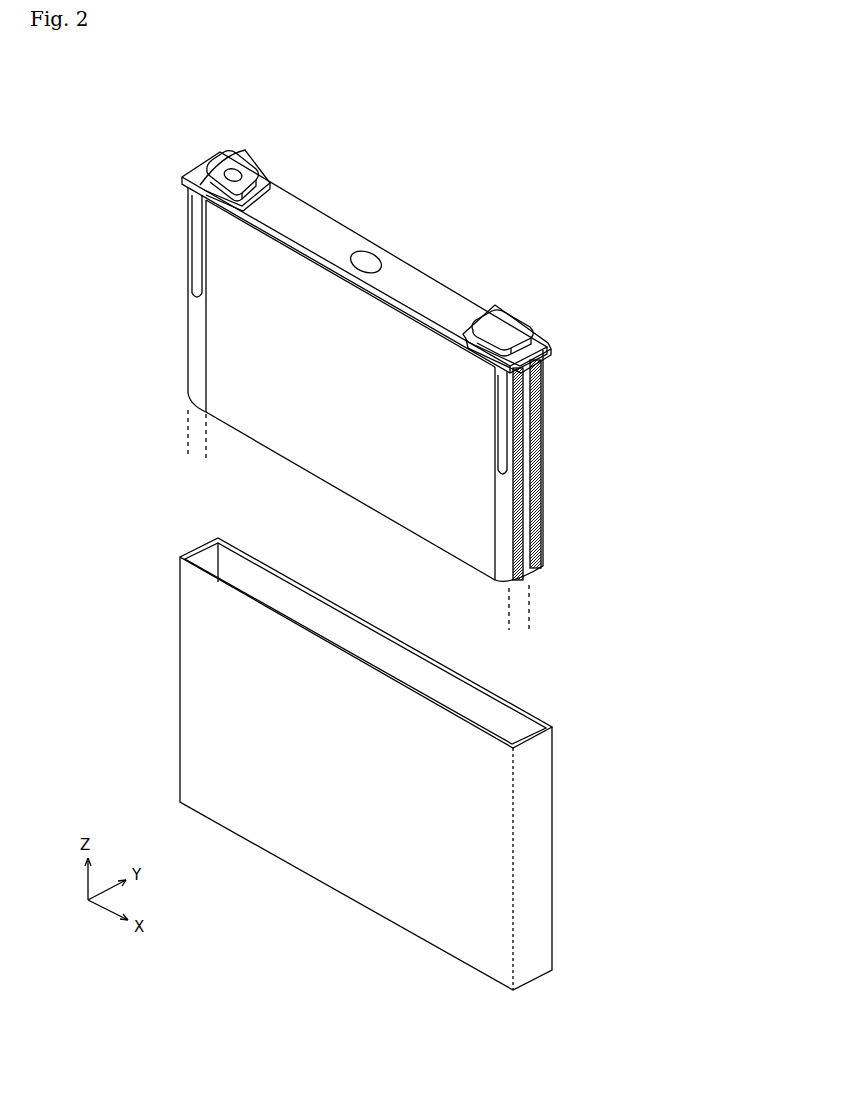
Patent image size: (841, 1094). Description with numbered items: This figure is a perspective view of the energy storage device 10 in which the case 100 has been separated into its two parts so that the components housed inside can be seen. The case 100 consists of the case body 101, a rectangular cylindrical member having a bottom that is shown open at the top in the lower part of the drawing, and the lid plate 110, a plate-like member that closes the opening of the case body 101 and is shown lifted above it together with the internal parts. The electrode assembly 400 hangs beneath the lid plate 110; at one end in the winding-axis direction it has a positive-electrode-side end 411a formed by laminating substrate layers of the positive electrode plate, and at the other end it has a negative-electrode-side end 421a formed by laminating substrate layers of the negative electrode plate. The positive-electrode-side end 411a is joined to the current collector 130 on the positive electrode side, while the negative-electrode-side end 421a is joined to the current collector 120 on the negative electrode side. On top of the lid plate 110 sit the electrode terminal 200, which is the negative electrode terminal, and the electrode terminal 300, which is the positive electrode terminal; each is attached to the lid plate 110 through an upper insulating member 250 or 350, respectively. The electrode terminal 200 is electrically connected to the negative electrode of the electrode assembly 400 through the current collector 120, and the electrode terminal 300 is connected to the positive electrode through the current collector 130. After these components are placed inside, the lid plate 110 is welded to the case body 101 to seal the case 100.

The energy storage device 10 is at (505, 152).
The case 100 is at (686, 420).
The case body 101 is at (540, 760).
The lid plate 110 is at (549, 352).
The current collector 120 is at (188, 242).
The current collector 130 is at (497, 407).
The electrode terminal 200 is at (238, 168).
The upper insulating member 250 is at (262, 188).
The electrode terminal 300 is at (511, 322).
The upper insulating member 350 is at (548, 345).
The electrode assembly 400 is at (358, 473).
The positive-electrode-side end 411a is at (529, 630).
The negative-electrode-side end 421a is at (206, 460).